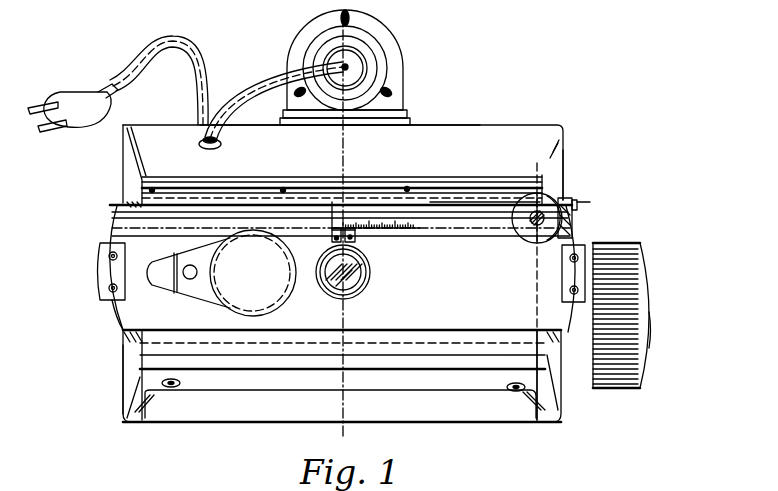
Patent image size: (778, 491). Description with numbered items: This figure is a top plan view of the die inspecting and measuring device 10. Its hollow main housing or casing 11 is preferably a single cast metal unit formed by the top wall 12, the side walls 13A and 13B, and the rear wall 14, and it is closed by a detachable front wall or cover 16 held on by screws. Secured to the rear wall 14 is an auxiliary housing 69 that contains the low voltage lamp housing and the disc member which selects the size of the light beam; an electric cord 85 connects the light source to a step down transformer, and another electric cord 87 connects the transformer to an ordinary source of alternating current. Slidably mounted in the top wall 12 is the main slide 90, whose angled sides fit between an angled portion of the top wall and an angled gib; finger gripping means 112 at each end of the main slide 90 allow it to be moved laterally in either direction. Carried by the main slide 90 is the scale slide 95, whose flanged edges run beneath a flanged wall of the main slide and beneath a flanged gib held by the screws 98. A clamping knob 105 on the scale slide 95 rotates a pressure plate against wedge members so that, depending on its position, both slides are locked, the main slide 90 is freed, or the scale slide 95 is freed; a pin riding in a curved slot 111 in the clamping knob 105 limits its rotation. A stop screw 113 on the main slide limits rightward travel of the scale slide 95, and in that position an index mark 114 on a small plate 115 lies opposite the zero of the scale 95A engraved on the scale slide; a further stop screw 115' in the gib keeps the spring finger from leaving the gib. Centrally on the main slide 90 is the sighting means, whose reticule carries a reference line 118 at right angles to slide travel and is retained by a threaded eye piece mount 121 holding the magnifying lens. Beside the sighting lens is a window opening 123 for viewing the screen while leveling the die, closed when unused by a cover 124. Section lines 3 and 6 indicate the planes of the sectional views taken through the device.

The die inspecting and measuring device 10 is at (238, 427).
The main housing 11 is at (135, 362).
The top wall 12 is at (150, 343).
The side wall 13A is at (128, 187).
The side wall 13B is at (565, 176).
The rear wall 14 is at (514, 133).
The front wall or cover 16 is at (125, 397).
The section line 3- 3 is at (355, 5).
The section line 6- 6 is at (538, 172).
The auxiliary housing 69 is at (400, 64).
The electric cord 85 is at (248, 78).
The electric cord 87 is at (145, 52).
The main slide 90 is at (122, 318).
The scale slide 95 is at (445, 212).
The scale 95A is at (364, 236).
The screws 98 is at (284, 189).
The clamping knob 105 is at (572, 198).
The curved slot 111 is at (533, 244).
The finger gripping means 112 is at (100, 270).
The stop screw 113 is at (606, 206).
The index mark 114 is at (332, 246).
The small plate 115 is at (369, 248).
The stop screw 115' is at (596, 208).
The reference line 118 is at (323, 289).
The eye piece mount 121 is at (366, 290).
The window opening 123 is at (240, 294).
The cover 124 is at (274, 302).